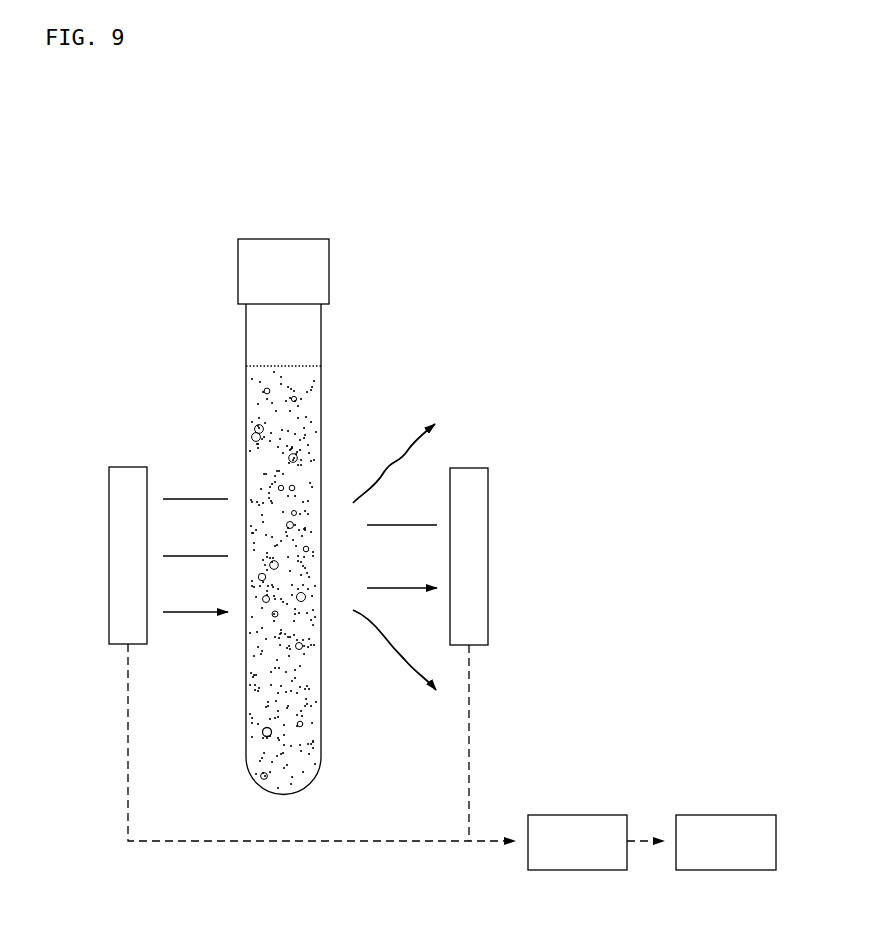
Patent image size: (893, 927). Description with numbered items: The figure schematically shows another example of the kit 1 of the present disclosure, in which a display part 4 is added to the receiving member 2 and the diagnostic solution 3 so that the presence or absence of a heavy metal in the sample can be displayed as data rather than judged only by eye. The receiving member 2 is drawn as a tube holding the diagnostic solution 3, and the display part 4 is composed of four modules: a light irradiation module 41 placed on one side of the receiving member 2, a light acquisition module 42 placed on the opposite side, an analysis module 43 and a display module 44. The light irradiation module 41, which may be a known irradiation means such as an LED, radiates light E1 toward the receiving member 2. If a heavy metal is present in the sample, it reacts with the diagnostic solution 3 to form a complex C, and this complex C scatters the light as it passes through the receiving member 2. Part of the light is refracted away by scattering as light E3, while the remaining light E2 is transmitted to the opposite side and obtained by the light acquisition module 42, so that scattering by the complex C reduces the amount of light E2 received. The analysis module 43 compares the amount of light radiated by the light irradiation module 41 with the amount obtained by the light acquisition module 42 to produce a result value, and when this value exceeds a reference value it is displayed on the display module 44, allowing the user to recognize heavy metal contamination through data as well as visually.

The kit 1 is at (107, 184).
The receiving member 2 is at (322, 334).
The diagnostic solution 3 is at (263, 402).
The complex C is at (263, 729).
The light radiated to the receiving member E1 is at (197, 498).
The light obtained by the light acquisition module E2 is at (400, 524).
The light refracted by scattering E3 is at (396, 452).
The display part 4 is at (676, 397).
The light irradiation module 41 is at (109, 497).
The light acquisition module 42 is at (488, 508).
The analysis module 43 is at (600, 815).
The display module 44 is at (744, 815).